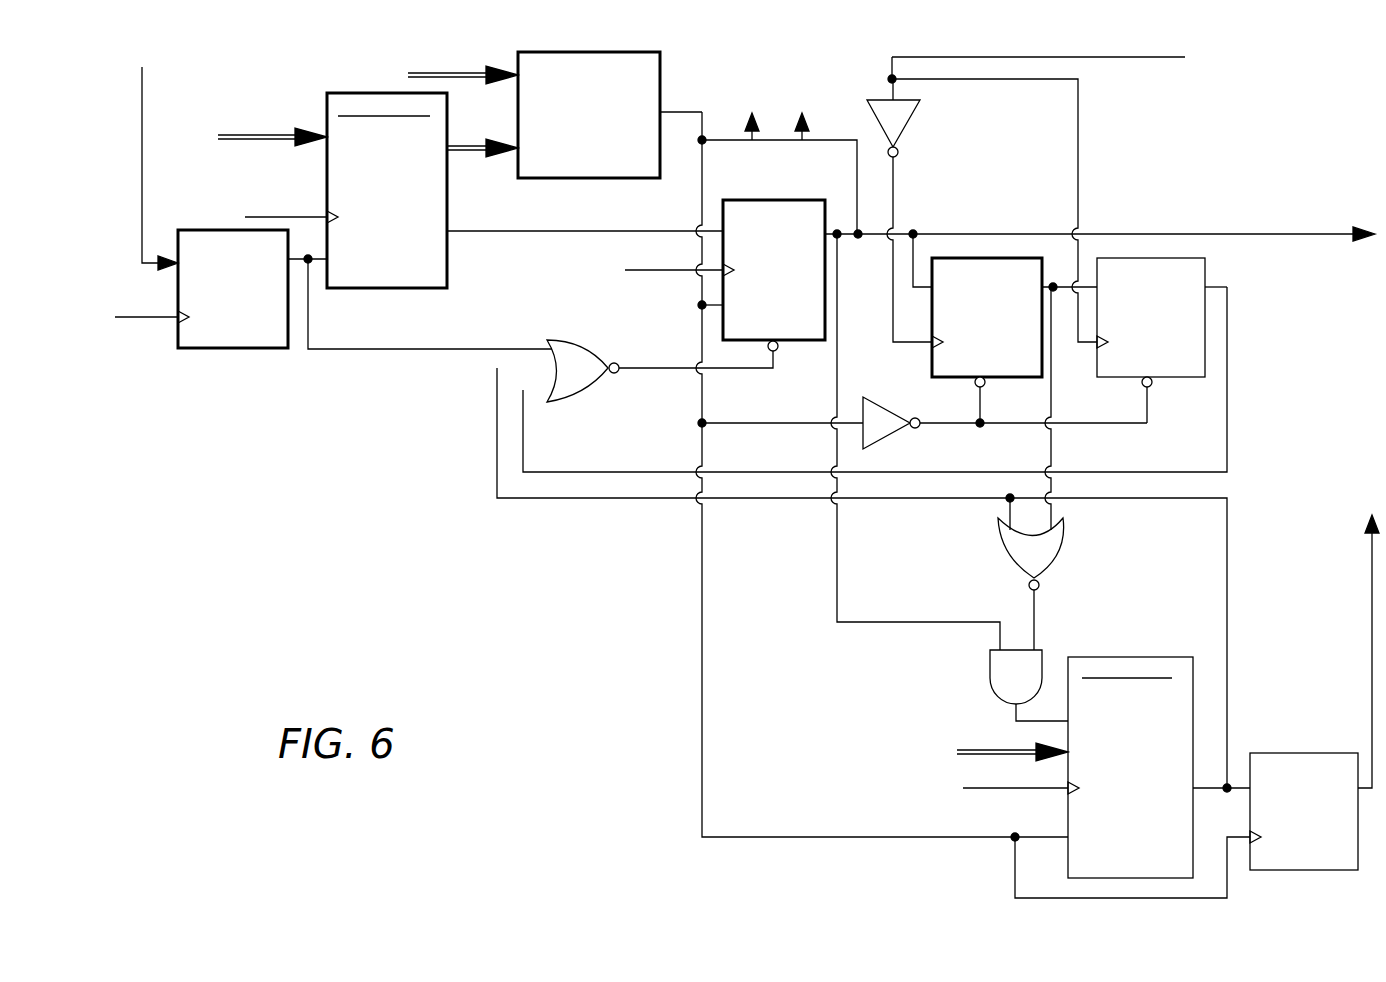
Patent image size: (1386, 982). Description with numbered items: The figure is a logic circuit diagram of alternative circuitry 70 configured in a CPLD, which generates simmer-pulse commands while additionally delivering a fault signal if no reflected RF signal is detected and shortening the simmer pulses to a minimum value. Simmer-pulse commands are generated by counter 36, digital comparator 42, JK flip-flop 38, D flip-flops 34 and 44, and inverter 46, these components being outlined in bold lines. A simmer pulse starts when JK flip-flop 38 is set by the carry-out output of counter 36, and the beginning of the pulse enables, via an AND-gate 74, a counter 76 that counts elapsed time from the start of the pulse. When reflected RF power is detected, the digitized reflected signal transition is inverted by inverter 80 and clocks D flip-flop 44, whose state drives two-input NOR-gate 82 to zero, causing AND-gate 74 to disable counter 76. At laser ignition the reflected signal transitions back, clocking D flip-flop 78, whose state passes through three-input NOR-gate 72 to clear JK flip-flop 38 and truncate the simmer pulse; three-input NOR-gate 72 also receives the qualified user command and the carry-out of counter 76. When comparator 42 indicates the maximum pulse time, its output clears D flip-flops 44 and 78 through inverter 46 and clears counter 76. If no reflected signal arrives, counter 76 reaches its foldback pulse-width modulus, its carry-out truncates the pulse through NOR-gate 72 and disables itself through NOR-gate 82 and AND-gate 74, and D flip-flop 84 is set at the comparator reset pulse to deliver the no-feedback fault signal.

The D flip-flop 34 is at (245, 343).
The counter 36 is at (330, 105).
The JK flip-flop 38 is at (808, 328).
The digital comparator 42 is at (617, 172).
The D flip-flop 44 is at (930, 358).
The inverter 46 is at (880, 437).
The circuitry 70 is at (414, 604).
The three-input NOR-gate 72 is at (578, 385).
The AND-gate 74 is at (997, 658).
The counter 76 is at (1183, 662).
The D flip-flop 78 is at (1183, 367).
The inverter 80 is at (895, 128).
The two-input NOR-gate 82 is at (1015, 548).
The D flip-flop 84 is at (1300, 758).